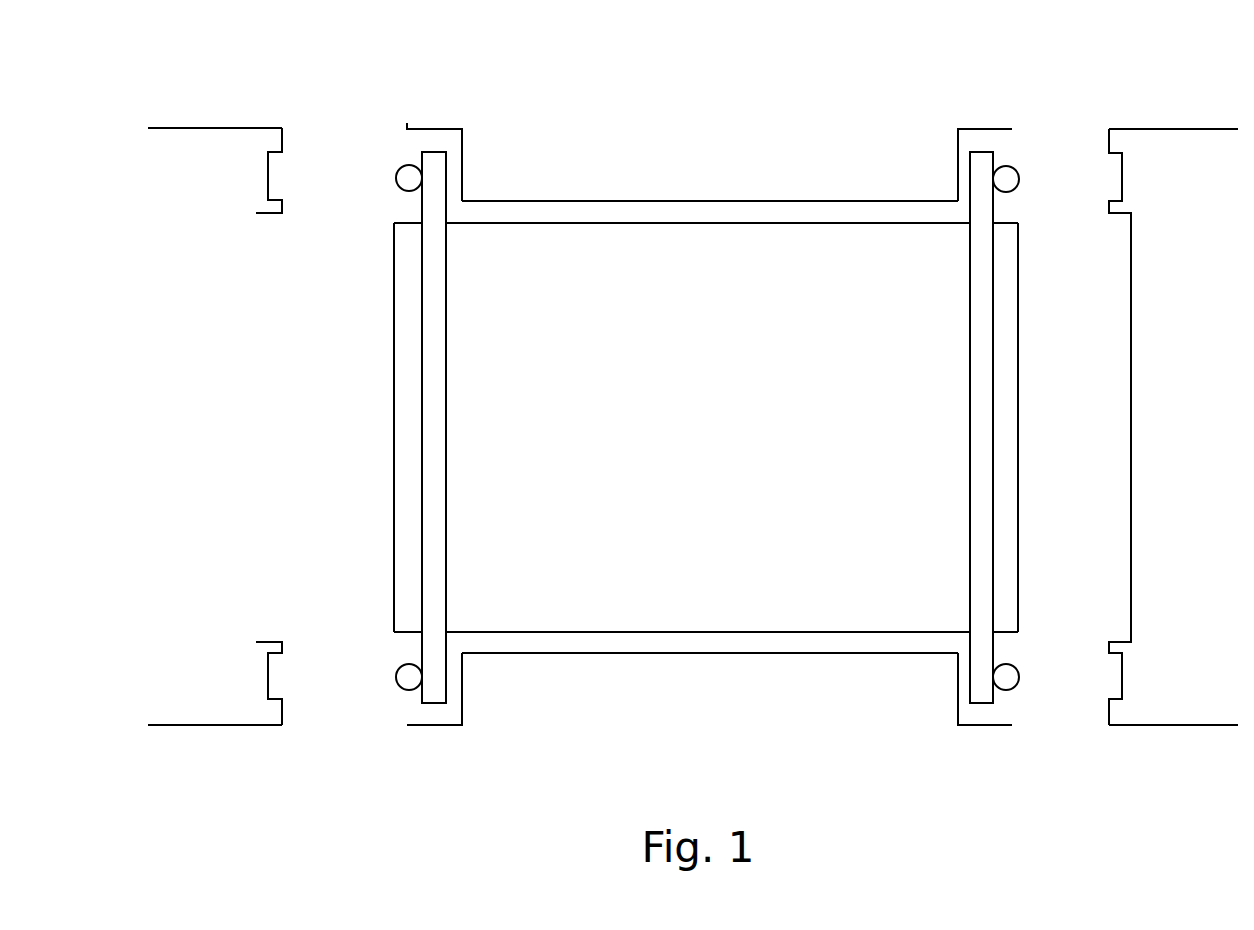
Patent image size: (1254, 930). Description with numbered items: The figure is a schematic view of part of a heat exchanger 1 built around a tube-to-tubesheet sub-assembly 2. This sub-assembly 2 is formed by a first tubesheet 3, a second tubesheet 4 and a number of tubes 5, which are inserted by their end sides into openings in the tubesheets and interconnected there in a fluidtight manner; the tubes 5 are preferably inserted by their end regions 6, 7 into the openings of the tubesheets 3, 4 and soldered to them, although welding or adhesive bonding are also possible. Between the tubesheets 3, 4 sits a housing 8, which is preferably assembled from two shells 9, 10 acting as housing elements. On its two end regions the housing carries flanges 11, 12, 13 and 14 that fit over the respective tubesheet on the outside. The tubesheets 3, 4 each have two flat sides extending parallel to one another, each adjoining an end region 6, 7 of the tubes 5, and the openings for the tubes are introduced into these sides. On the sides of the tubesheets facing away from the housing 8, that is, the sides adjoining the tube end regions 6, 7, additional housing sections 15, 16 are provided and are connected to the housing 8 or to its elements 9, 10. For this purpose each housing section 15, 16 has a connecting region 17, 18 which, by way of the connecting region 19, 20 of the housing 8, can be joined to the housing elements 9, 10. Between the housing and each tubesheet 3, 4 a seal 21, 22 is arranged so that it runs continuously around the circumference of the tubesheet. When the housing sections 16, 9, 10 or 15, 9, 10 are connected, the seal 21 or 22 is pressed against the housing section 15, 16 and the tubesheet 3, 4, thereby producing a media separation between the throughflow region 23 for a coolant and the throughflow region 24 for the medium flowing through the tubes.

The heat exchanger 1 is at (958, 88).
The tube-to-tubesheet sub-assembly 2 is at (487, 222).
The first tubesheet 3 is at (433, 160).
The second tubesheet 4 is at (983, 168).
The tubes 5 is at (540, 240).
The end region of tube 6 is at (1008, 243).
The end region of tube 7 is at (402, 240).
The housing 8 is at (704, 150).
The shell 9 is at (612, 201).
The shell 10 is at (637, 653).
The flange 11 is at (961, 693).
The flange 12 is at (957, 155).
The flange 13 is at (453, 698).
The flange 14 is at (468, 157).
The additional housing section 15 is at (1192, 128).
The additional housing section 16 is at (198, 142).
The connecting region of housing section 17 is at (1107, 118).
The connecting region of housing section 18 is at (290, 117).
The connecting region of housing 19 is at (407, 125).
The connecting region of housing 20 is at (1005, 127).
The seal 21 is at (1010, 680).
The seal 22 is at (406, 680).
The throughflow region for coolant 23 is at (845, 215).
The throughflow region for tube medium 24 is at (364, 426).